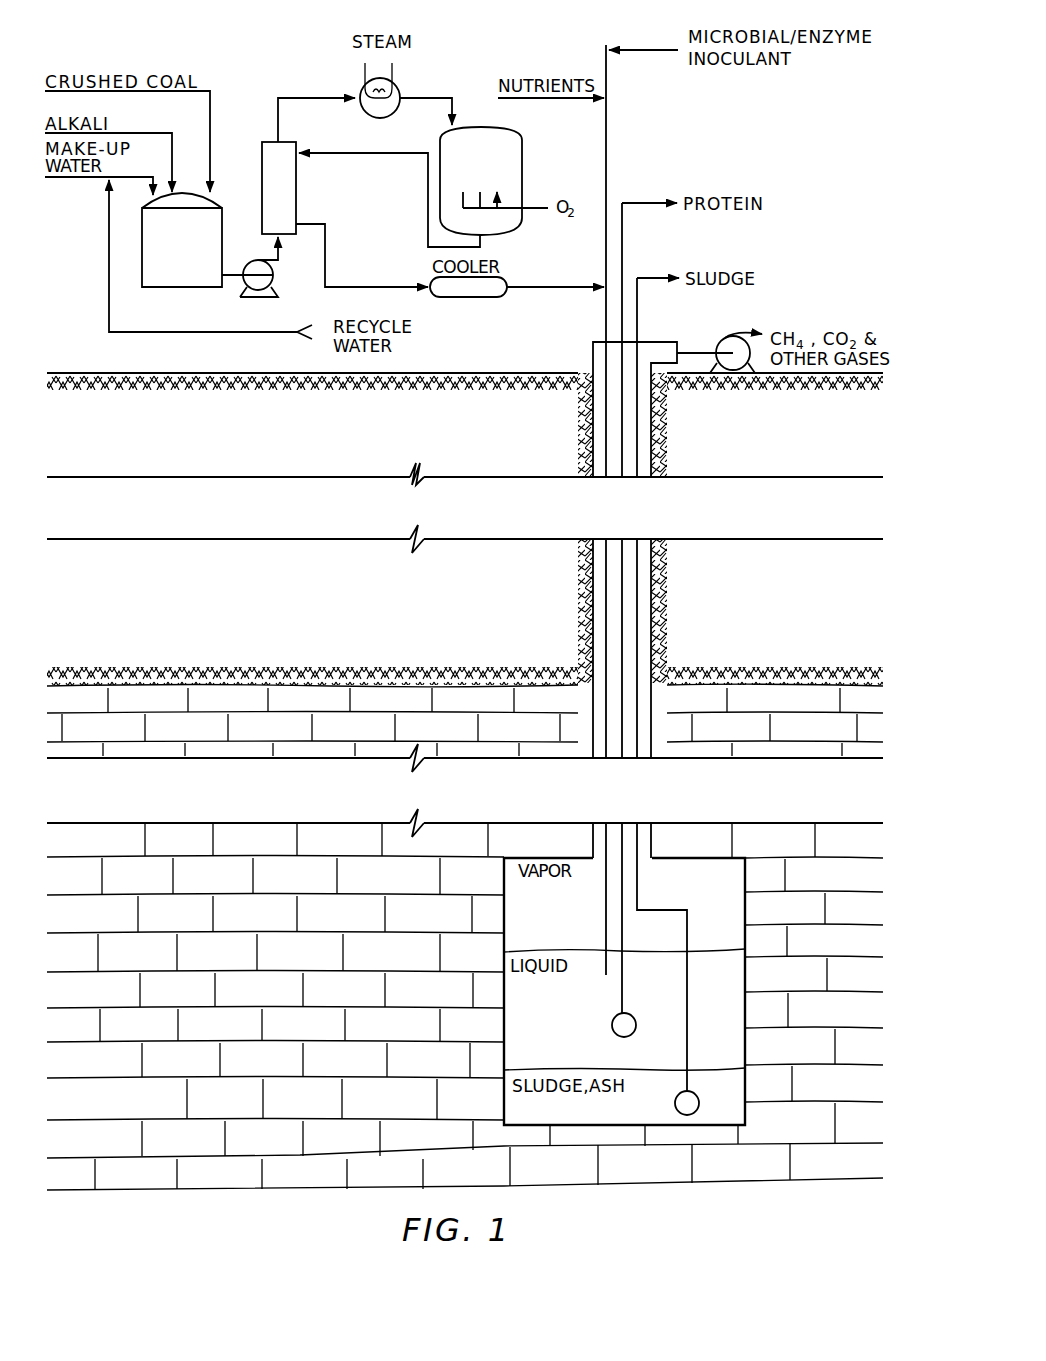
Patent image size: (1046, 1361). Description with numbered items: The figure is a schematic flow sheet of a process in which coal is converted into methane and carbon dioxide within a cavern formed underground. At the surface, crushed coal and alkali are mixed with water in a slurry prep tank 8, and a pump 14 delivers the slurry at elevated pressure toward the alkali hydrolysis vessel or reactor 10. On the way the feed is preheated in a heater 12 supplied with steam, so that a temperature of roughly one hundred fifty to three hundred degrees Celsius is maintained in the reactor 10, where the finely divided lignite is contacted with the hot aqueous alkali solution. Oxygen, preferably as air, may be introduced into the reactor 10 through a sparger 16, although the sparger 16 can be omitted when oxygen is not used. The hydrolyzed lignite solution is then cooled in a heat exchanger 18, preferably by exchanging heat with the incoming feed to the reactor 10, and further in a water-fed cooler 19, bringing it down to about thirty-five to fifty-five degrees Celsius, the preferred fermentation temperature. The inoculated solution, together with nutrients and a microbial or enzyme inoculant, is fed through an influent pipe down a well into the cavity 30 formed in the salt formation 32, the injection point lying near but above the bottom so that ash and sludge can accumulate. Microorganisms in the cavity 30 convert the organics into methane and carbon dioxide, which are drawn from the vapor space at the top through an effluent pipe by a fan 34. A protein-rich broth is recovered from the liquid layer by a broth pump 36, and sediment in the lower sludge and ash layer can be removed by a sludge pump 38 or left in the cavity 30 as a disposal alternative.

The slurry prep tank 8 is at (224, 216).
The alkali hydrolysis vessel 10 is at (522, 150).
The heater 12 is at (395, 85).
The pump 14 is at (273, 277).
The sparger 16 is at (490, 210).
The heat exchanger 18 is at (262, 147).
The cooler 19 is at (478, 300).
The cavity 30 is at (723, 1013).
The salt formation 32 is at (314, 956).
The fan 34 is at (721, 345).
The broth pump 36 is at (635, 1015).
The sludge pump 38 is at (709, 1084).